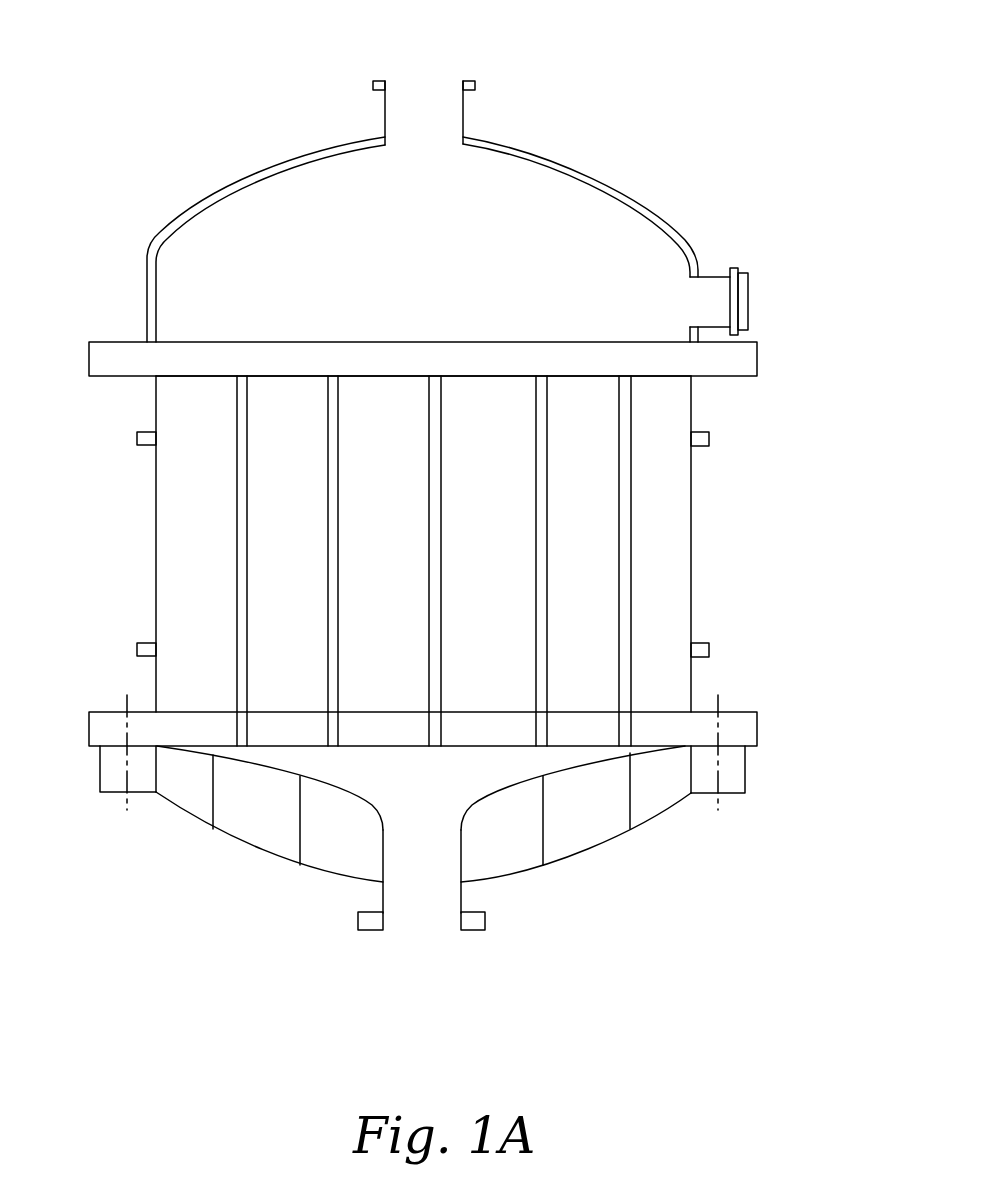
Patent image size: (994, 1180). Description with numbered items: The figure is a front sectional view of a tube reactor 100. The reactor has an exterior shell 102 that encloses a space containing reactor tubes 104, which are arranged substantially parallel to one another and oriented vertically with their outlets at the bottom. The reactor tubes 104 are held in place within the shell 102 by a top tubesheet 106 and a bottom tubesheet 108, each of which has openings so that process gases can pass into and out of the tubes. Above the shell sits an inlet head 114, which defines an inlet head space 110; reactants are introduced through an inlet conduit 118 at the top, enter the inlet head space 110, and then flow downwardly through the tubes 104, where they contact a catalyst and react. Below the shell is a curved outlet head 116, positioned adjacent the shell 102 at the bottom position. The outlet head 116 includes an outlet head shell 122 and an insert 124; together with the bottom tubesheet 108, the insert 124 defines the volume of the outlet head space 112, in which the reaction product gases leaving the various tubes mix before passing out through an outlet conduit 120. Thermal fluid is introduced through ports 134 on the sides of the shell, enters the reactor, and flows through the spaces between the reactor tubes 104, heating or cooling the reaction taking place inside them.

The tube reactor 100 is at (700, 62).
The exterior shell 102 is at (156, 545).
The reactor tubes 104 is at (328, 545).
The top tubesheet 106 is at (198, 378).
The bottom tubesheet 108 is at (193, 710).
The inlet head space 110 is at (423, 341).
The outlet head space 112 is at (423, 819).
The inlet head 114 is at (580, 169).
The outlet head 116 is at (172, 806).
The inlet conduit 118 is at (424, 78).
The outlet conduit 120 is at (418, 922).
The outlet head shell 122 is at (268, 862).
The insert 124 is at (337, 783).
The ports 134 is at (137, 438).